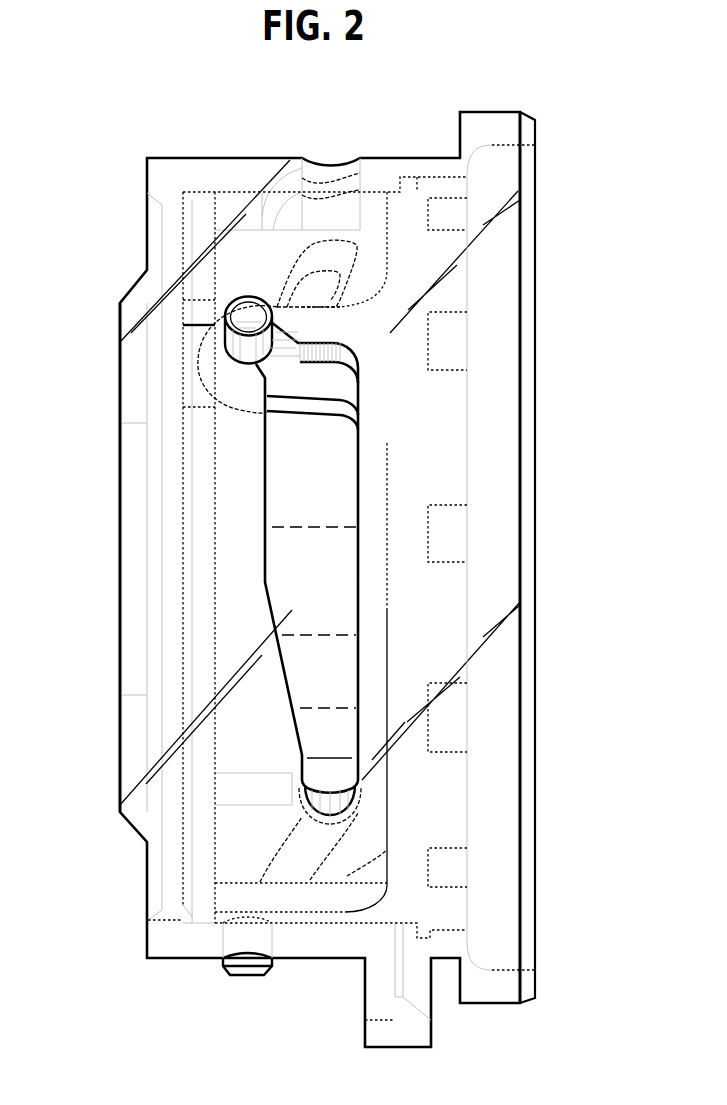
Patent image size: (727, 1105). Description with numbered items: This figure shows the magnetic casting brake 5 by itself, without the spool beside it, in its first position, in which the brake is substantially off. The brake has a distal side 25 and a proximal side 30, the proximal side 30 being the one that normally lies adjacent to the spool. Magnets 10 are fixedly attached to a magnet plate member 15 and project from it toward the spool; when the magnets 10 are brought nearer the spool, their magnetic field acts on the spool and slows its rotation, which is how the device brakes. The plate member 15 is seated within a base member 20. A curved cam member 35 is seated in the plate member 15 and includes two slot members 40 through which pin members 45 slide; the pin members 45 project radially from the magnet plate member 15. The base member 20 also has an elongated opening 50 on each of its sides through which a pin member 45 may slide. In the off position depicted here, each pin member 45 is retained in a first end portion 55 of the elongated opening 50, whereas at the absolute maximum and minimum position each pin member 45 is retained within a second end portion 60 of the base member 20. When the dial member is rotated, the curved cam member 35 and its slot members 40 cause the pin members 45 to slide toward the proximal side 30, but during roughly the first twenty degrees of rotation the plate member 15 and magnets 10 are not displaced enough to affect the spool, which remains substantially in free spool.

The magnetic casting brake 5 is at (582, 141).
The magnets 10 is at (438, 448).
The magnet plate member 15 is at (407, 598).
The base member 20 is at (147, 170).
The distal side 25 is at (90, 475).
The proximal side 30 is at (595, 619).
The curved cam member 35 is at (302, 503).
The slot members 40 is at (310, 293).
The pin members 45 is at (248, 322).
The elongated opening 50 is at (312, 613).
The first end portion 55 is at (241, 297).
The second end portion 60 is at (330, 773).